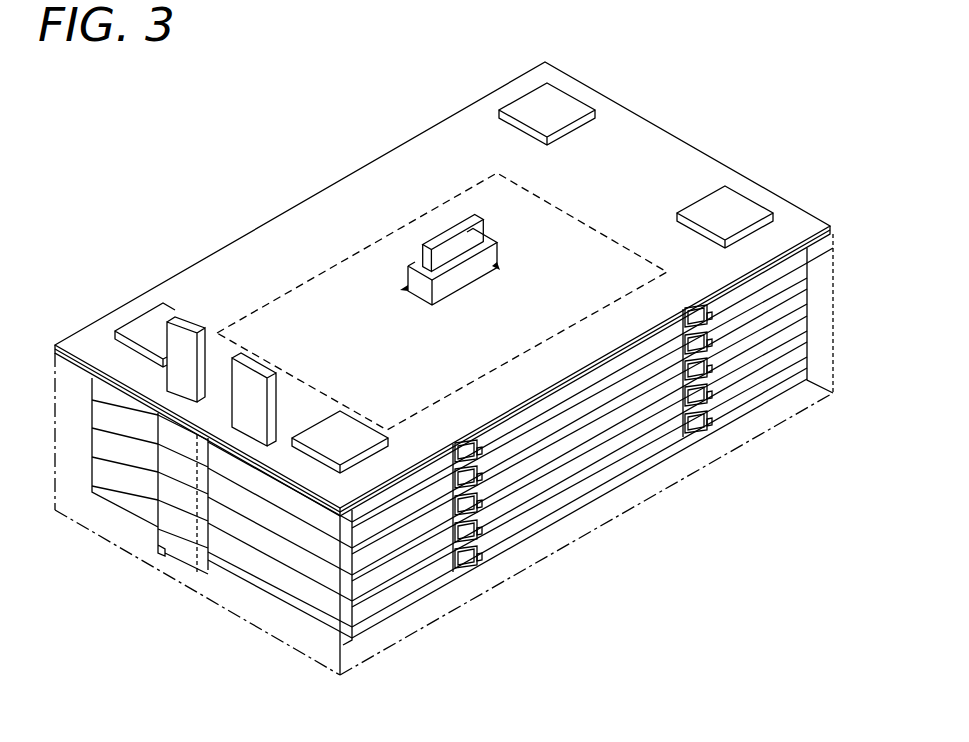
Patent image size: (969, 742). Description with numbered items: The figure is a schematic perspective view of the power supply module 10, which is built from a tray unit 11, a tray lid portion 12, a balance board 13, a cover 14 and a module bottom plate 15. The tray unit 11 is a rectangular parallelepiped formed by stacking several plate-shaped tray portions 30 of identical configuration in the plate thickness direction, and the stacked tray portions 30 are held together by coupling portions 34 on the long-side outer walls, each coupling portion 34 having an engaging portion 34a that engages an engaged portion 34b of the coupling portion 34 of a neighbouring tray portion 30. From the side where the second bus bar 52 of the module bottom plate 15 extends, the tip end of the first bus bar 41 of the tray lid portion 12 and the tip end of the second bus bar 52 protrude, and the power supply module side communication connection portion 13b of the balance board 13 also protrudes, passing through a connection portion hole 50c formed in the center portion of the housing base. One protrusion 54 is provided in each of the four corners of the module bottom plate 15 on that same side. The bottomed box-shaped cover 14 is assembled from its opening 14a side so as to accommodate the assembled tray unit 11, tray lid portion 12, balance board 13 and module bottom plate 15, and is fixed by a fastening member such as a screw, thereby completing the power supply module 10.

The power supply module 10 is at (427, 88).
The tray unit 11 is at (820, 299).
The tray lid portion 12 is at (296, 607).
The balance board 13 is at (583, 224).
The power module side communication connection portion 13b is at (440, 236).
The cover 14 is at (767, 428).
The opening 14a is at (80, 350).
The module bottom plate 15 is at (651, 160).
The tray portion 30 is at (803, 357).
The coupling portion 34 is at (593, 588).
The engaging portion 34a is at (463, 560).
The engaged portion 34b is at (477, 544).
The first bus bar 41 is at (262, 358).
The connection portion hole 50c is at (450, 290).
The second bus bar 52 is at (190, 321).
The protrusion 54 is at (133, 322).